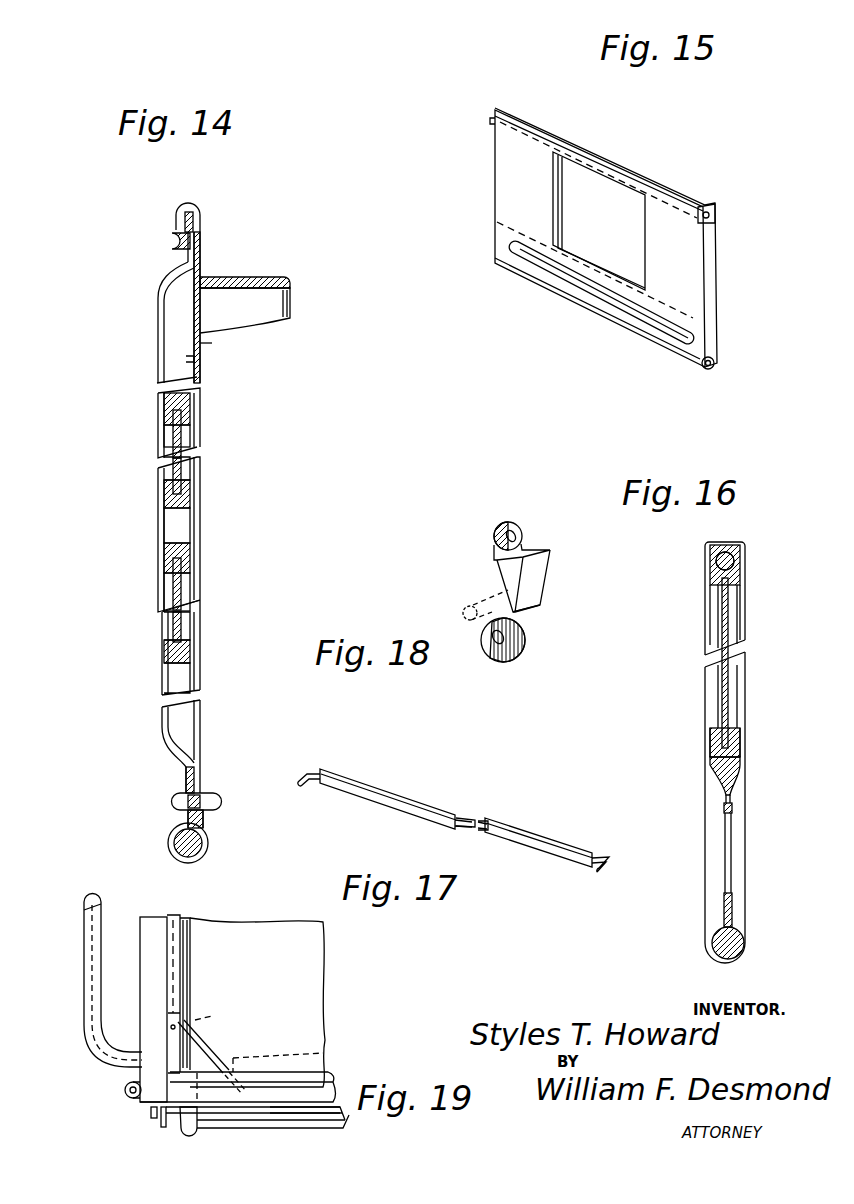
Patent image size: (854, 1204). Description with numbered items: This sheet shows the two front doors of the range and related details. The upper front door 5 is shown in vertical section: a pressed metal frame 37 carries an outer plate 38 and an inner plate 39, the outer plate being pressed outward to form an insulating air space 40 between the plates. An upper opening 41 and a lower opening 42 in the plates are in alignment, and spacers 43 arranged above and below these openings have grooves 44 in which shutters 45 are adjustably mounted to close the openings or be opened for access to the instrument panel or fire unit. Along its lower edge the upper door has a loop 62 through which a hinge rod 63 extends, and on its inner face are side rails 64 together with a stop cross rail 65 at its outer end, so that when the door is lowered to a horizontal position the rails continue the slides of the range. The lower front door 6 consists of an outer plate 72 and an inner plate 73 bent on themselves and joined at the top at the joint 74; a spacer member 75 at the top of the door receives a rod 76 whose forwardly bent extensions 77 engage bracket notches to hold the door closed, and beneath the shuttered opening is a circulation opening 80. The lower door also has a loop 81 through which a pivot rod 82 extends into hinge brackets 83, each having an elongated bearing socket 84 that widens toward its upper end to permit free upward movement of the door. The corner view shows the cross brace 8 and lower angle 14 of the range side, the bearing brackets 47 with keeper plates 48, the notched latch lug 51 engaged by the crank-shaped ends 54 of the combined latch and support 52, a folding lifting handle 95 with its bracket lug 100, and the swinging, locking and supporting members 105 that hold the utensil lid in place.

In FIG. 14, the upper front door 5 is at (212, 343).
In FIG. 19, the upper front door 5 is at (252, 1125).
In FIG. 16, the lower front door 6 is at (745, 765).
In FIG. 19, the cross brace 8 is at (283, 1085).
In FIG. 19, the lower angle 14 is at (157, 994).
In FIG. 14, the pressed metal frame 37 is at (197, 258).
In FIG. 14, the outer plate 38 is at (168, 336).
In FIG. 14, the inner plate 39 is at (200, 356).
In FIG. 14, the air space 40 is at (172, 302).
In FIG. 14, the upper opening 41 is at (200, 462).
In FIG. 14, the lower opening 42 is at (190, 590).
In FIG. 14, the spacers 43 is at (164, 410).
In FIG. 14, the grooves 44 is at (168, 490).
In FIG. 14, the shutters 45 is at (173, 440).
In FIG. 19, the bearing brackets 47 is at (166, 1116).
In FIG. 19, the keeper plates 48 is at (182, 1130).
In FIG. 19, the notched latch lug 51 is at (150, 1112).
In FIG. 19, the combined latch and support 52 is at (315, 1127).
In FIG. 19, the crank-shaped ends 54 is at (161, 1114).
In FIG. 14, the loop 62 is at (172, 840).
In FIG. 14, the hinge rod 63 is at (210, 840).
In FIG. 14, the side rails 64 is at (283, 298).
In FIG. 14, the stop cross rail 65 is at (240, 278).
In FIG. 15, the outer plate 72 is at (498, 178).
In FIG. 16, the outer plate 72 is at (710, 748).
In FIG. 16, the inner plate 73 is at (738, 577).
In FIG. 16, the joint 74 is at (732, 543).
In FIG. 16, the spacer member 75 is at (709, 577).
In FIG. 17, the spacer member 75 is at (553, 836).
In FIG. 16, the rod 76 is at (740, 561).
In FIG. 17, the rod 76 is at (583, 839).
In FIG. 17, the extensions 77 is at (600, 851).
In FIG. 15, the circulation opening 80 is at (567, 272).
In FIG. 15, the loop 81 is at (718, 366).
In FIG. 16, the loop 81 is at (732, 934).
In FIG. 16, the pivot rod 82 is at (747, 950).
In FIG. 18, the hinge bracket 83 is at (540, 553).
In FIG. 18, the elongated bearing socket 84 is at (533, 588).
In FIG. 19, the folding lifting handle 95 is at (84, 990).
In FIG. 19, the lug 100 is at (125, 1088).
In FIG. 19, the swinging, locking and supporting members 105 is at (197, 1012).